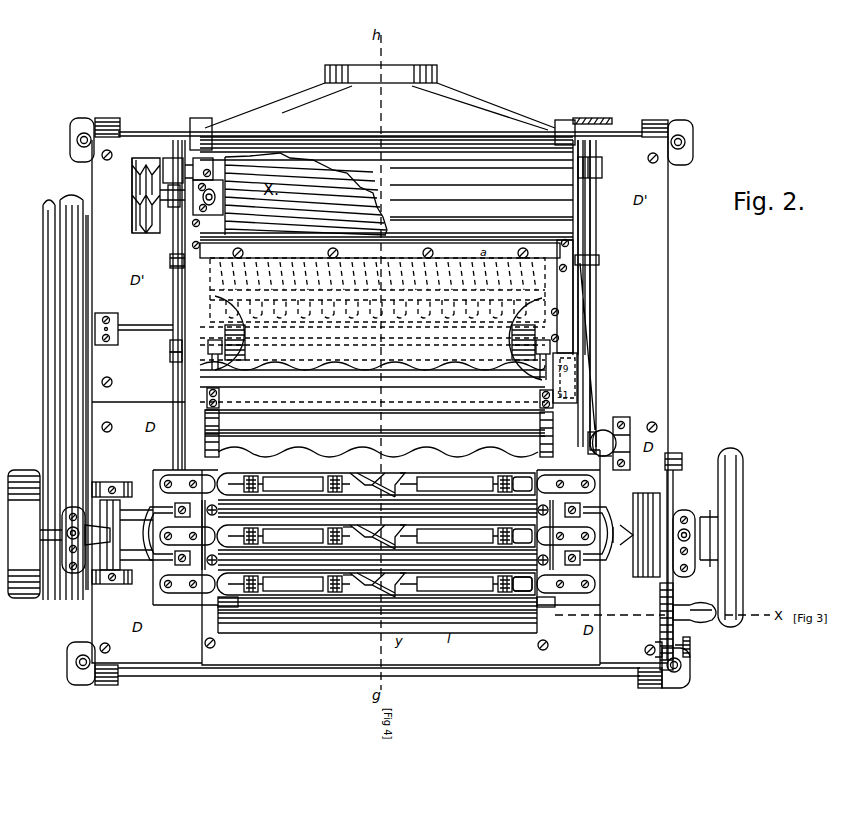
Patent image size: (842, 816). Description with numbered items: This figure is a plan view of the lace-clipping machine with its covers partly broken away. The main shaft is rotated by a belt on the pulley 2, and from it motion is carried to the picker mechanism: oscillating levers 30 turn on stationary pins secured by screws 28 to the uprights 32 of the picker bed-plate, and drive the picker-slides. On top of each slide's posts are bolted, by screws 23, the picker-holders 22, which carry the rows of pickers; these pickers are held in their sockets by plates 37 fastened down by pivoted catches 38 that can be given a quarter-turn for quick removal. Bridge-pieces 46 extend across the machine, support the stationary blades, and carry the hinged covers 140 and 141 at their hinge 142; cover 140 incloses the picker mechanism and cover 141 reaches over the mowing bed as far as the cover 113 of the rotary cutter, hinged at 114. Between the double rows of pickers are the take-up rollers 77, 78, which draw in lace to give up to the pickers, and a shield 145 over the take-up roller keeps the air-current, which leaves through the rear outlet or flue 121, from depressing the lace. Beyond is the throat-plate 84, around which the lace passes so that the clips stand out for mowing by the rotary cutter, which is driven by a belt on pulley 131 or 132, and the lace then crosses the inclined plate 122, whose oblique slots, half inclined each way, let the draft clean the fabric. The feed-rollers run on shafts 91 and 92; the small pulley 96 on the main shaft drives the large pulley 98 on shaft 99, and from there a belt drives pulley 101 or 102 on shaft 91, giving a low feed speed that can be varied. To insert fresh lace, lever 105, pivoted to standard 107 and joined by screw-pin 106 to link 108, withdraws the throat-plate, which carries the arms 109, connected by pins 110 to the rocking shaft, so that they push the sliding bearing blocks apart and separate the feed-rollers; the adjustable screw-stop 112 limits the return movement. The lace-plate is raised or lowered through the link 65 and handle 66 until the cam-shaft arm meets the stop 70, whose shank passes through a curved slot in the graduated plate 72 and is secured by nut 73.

The pulley 2 is at (35, 534).
The picker-holder 22 is at (377, 534).
The screws 23 is at (573, 535).
The screws 28 is at (130, 592).
The oscillating lever 30 is at (119, 535).
The upright 32 is at (122, 490).
The plate 37 is at (447, 600).
The pivoted catch 38 is at (428, 585).
The bridge-piece 46 is at (369, 605).
The link 65 is at (676, 490).
The handle 66 is at (704, 608).
The stop 70 is at (690, 648).
The plate 72 is at (668, 625).
The nut 73 is at (650, 645).
The take-up roller 77 is at (328, 566).
The take-up roller 78 is at (330, 515).
The throat-plate 84 is at (496, 280).
The shaft 91 is at (168, 337).
The shaft 92 is at (172, 358).
The small pulley 96 is at (50, 512).
The large pulley 98 is at (43, 372).
The shaft 99 is at (92, 380).
The pulley 101 is at (76, 198).
The pulley 102 is at (55, 200).
The lever 105 is at (600, 455).
The screw-pin 106 is at (588, 442).
The standard 107 is at (626, 464).
The link 108 is at (596, 365).
The arm 109 is at (176, 282).
The pin 110 is at (168, 160).
The adjustable screw-stop 112 is at (604, 120).
The cover 113 is at (386, 188).
The hinge 114 is at (200, 120).
The outlet or flue 121 is at (380, 97).
The inclined plate 122 is at (228, 335).
The pulley 131 is at (145, 160).
The pulley 132 is at (142, 172).
The cover 140 is at (375, 433).
The cover 141 is at (372, 382).
The hinge 142 is at (200, 432).
The shield 145 is at (372, 357).